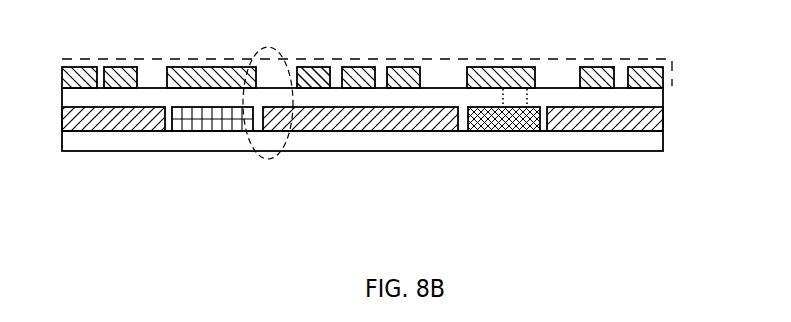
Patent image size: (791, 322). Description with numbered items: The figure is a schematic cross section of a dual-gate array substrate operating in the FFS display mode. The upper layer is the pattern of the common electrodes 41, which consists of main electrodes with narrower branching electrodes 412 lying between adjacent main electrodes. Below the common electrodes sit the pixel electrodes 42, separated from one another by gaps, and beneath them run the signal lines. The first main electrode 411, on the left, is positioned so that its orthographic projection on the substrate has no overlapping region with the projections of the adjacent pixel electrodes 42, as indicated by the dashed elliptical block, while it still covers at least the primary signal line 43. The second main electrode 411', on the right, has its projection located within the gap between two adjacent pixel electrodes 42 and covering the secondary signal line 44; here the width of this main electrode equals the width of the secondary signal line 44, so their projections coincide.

The common electrodes 41 is at (593, 57).
The first main electrode 411 is at (216, 55).
The branching electrodes 412 is at (313, 77).
The second main electrode 411' is at (505, 61).
The pixel electrodes 42 is at (663, 107).
The primary signal line 43 is at (213, 120).
The secondary signal line 44 is at (527, 118).